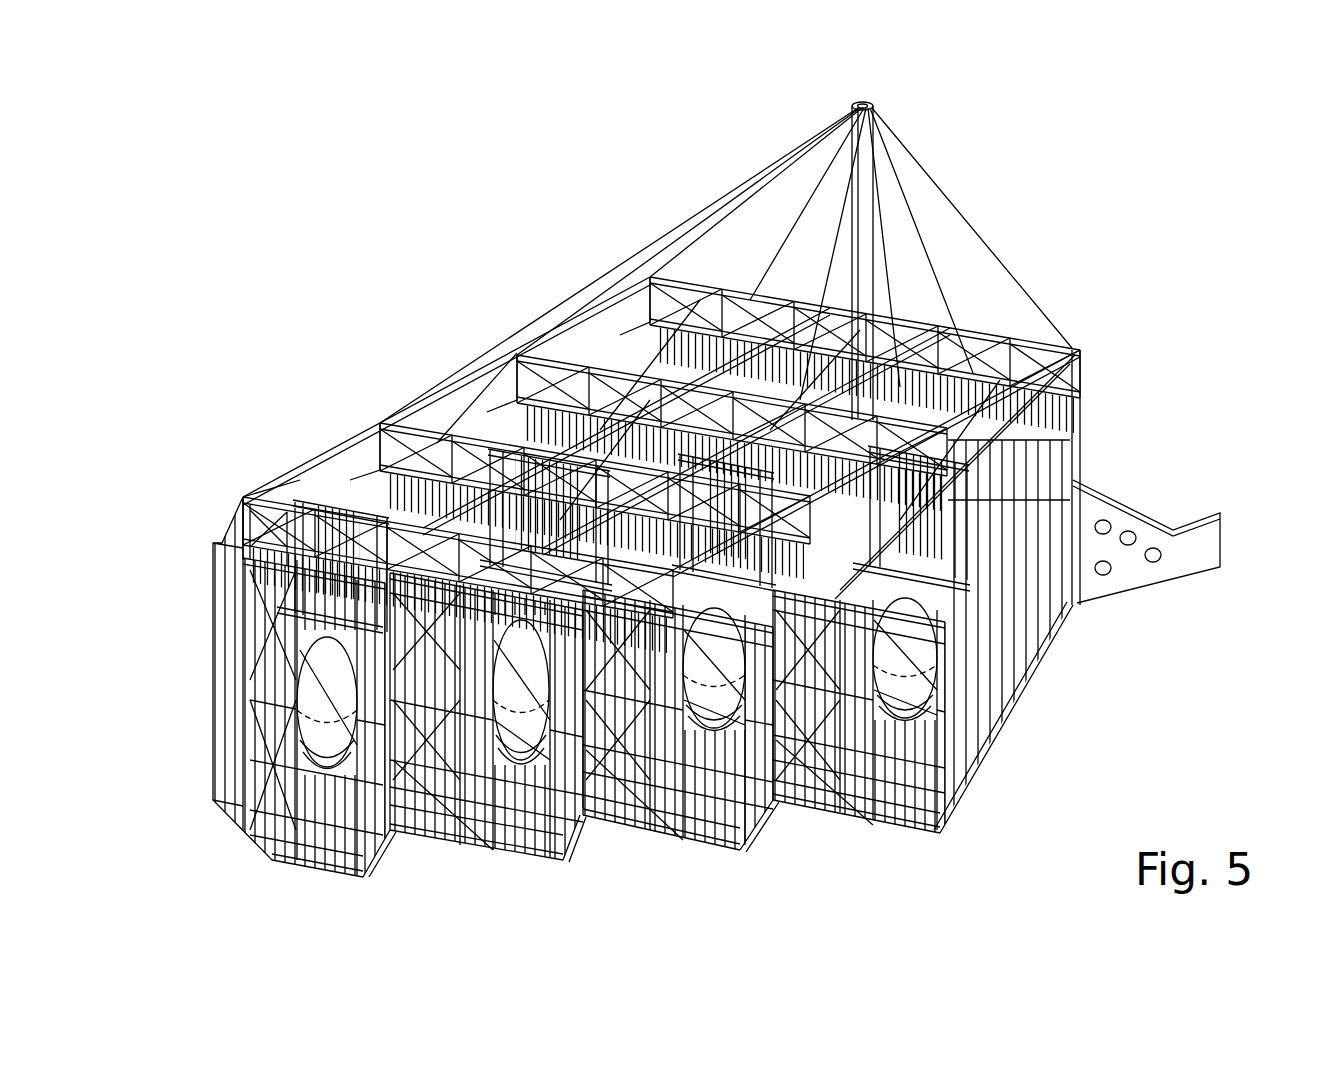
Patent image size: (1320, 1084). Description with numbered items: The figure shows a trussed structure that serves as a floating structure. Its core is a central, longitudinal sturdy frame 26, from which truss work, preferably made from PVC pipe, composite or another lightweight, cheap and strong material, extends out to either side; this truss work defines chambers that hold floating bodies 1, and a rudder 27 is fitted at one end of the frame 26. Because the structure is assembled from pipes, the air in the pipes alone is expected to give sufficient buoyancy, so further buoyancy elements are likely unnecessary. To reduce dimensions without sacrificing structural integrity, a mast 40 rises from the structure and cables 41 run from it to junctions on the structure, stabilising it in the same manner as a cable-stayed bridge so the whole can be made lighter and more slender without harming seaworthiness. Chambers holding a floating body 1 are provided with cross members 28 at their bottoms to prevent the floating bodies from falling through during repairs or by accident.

The floating body 1 is at (213, 655).
The frame 26 is at (1167, 402).
The rudder 27 is at (1200, 490).
The cross members 28 is at (478, 850).
The mast 40 is at (873, 230).
The cables 41 is at (690, 218).